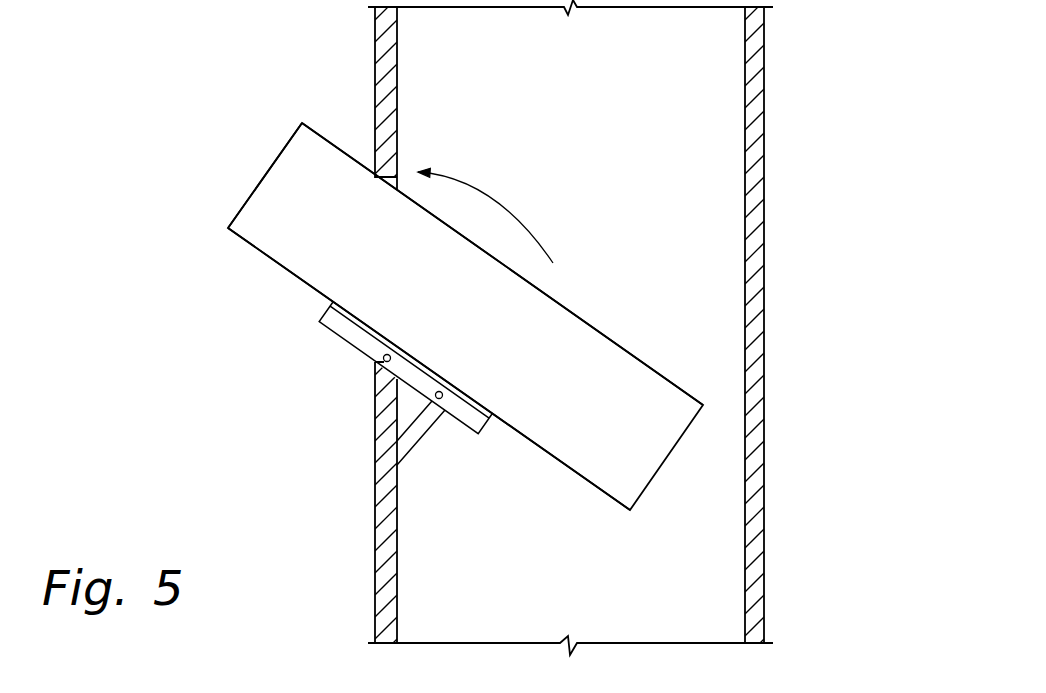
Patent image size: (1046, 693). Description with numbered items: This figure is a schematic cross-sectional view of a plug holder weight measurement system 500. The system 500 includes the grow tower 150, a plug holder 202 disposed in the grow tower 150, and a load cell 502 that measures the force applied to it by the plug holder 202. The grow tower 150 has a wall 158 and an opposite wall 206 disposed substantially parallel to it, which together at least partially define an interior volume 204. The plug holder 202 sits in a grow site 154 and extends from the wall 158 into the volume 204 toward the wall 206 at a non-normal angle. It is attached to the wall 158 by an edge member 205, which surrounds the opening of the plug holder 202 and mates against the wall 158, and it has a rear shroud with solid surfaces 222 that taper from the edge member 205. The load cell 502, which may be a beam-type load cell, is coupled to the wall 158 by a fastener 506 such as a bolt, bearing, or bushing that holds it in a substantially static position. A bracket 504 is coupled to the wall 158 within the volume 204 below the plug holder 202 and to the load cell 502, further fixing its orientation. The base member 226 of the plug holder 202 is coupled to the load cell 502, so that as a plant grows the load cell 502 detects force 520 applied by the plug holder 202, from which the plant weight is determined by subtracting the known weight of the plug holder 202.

The grow tower 150 is at (592, 330).
The grow site 154 is at (441, 332).
The wall 158 is at (373, 570).
The plug holder 202 is at (485, 333).
The interior volume 204 is at (552, 88).
The edge member 205 is at (267, 172).
The wall 206 is at (744, 77).
The surfaces 222 is at (603, 333).
The base member 226 is at (593, 485).
The plug holder weight measurement system 500 is at (321, 410).
The load cell 502 is at (467, 410).
The bracket 504 is at (410, 442).
The fastener 506 is at (375, 362).
The force 520 is at (495, 197).